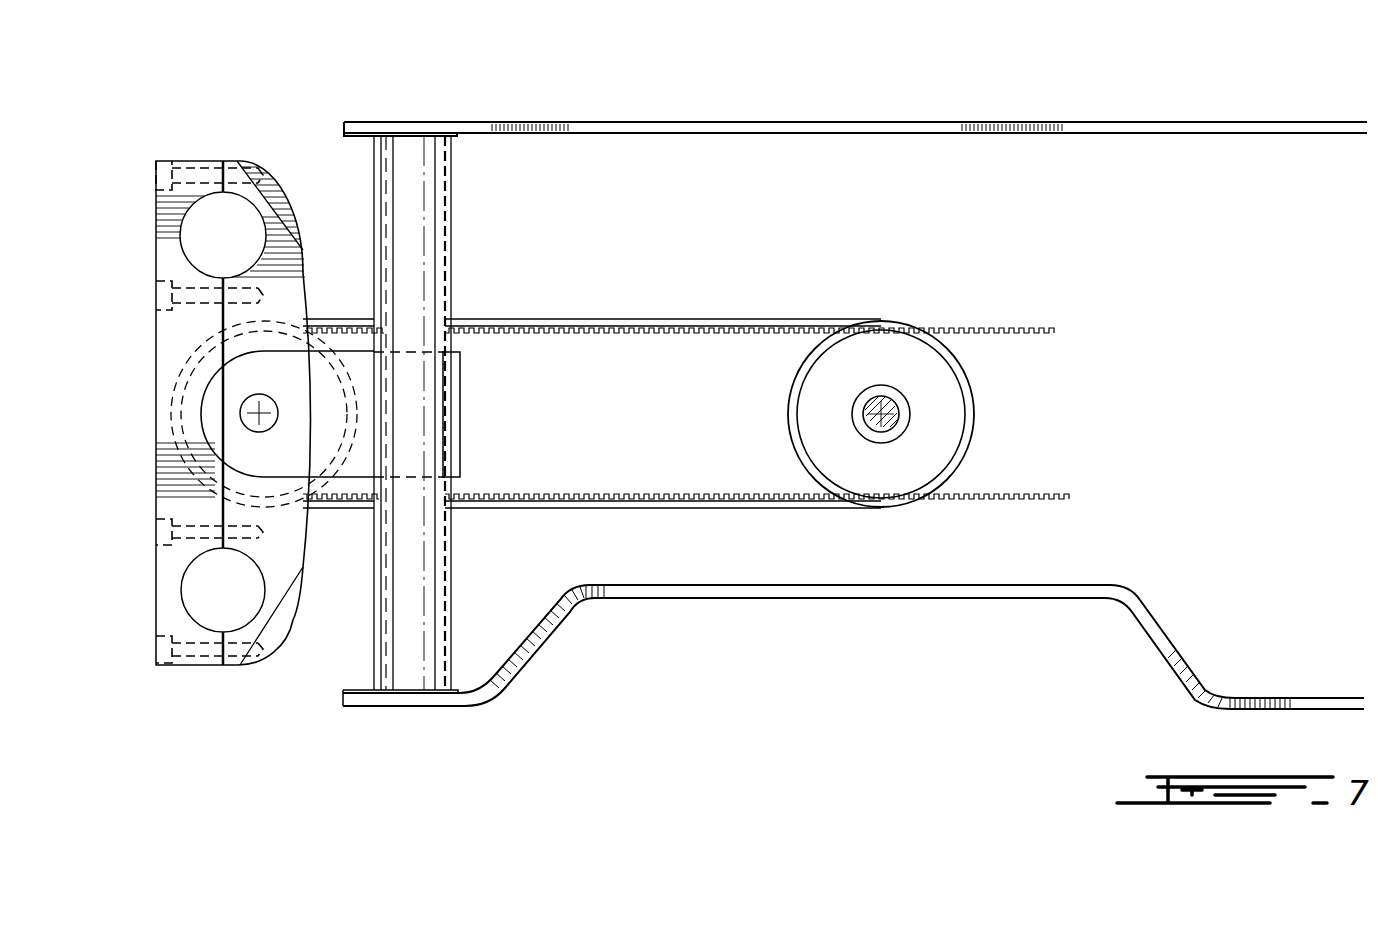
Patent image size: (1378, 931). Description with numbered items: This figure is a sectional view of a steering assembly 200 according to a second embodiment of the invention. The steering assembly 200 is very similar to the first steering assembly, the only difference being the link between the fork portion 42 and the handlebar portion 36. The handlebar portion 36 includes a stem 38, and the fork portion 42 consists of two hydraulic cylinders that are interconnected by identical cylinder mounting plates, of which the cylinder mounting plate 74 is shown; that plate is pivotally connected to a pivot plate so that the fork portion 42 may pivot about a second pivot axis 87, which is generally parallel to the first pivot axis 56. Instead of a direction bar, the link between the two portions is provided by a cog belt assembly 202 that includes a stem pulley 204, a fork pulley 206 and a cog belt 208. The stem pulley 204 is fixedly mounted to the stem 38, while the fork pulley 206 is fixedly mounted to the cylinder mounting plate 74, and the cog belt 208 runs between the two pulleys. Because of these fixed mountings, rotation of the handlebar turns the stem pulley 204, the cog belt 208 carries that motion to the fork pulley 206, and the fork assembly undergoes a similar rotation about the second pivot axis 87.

The handlebar portion 36 is at (891, 292).
The stem 38 is at (898, 413).
The fork portion 42 is at (197, 140).
The first pivot axis 56 is at (890, 422).
The cylinder mounting plate 74 is at (303, 222).
The second pivot axis 87 is at (250, 418).
The steering assembly 200 is at (288, 705).
The cog belt assembly 202 is at (680, 302).
The stem pulley 204 is at (905, 365).
The fork pulley 206 is at (300, 352).
The cog belt 208 is at (686, 496).